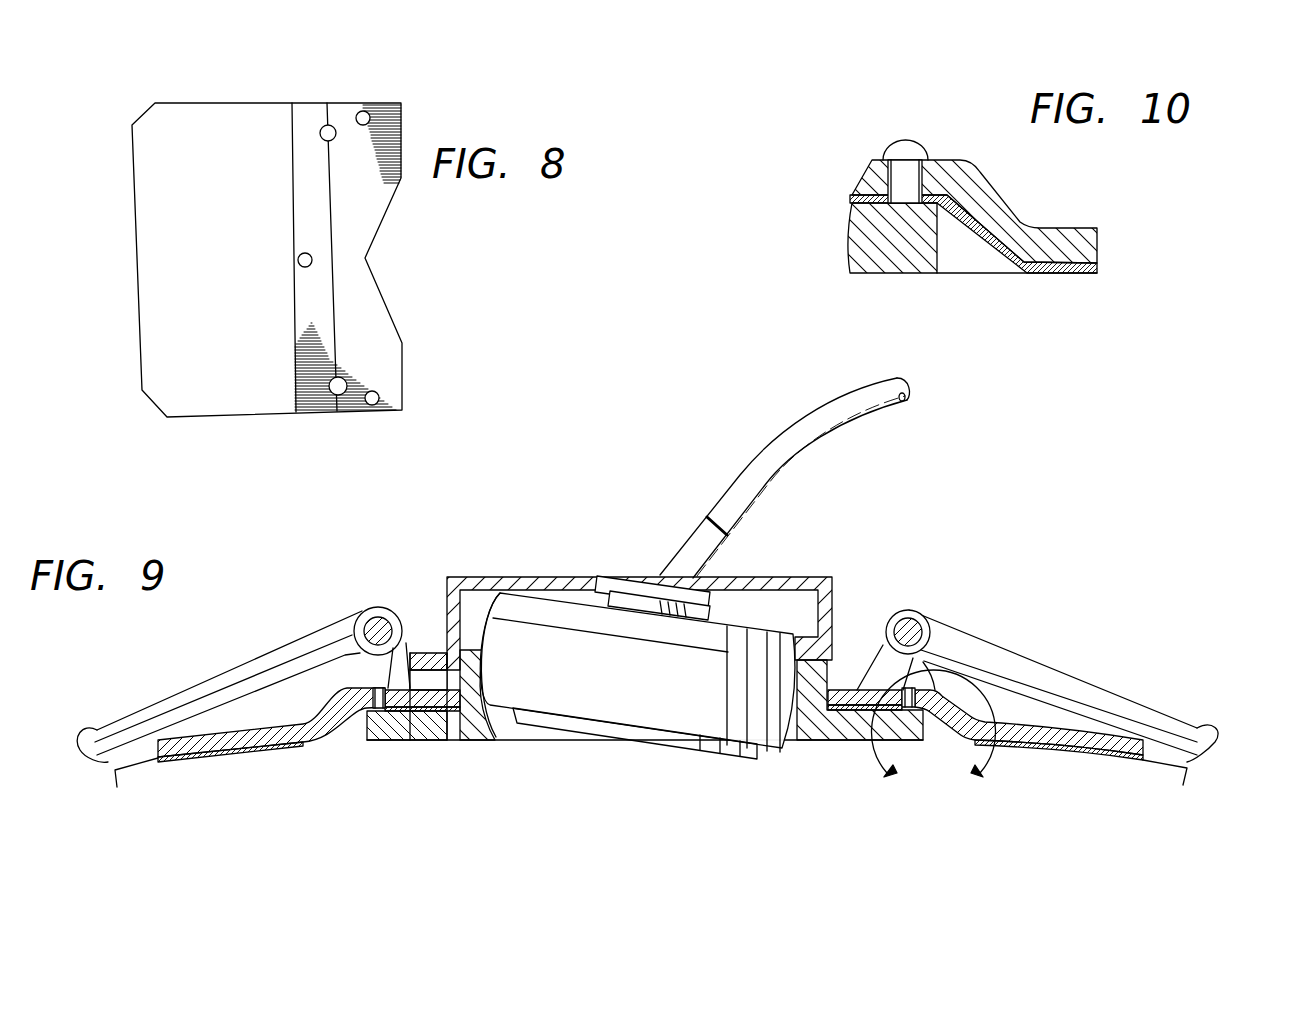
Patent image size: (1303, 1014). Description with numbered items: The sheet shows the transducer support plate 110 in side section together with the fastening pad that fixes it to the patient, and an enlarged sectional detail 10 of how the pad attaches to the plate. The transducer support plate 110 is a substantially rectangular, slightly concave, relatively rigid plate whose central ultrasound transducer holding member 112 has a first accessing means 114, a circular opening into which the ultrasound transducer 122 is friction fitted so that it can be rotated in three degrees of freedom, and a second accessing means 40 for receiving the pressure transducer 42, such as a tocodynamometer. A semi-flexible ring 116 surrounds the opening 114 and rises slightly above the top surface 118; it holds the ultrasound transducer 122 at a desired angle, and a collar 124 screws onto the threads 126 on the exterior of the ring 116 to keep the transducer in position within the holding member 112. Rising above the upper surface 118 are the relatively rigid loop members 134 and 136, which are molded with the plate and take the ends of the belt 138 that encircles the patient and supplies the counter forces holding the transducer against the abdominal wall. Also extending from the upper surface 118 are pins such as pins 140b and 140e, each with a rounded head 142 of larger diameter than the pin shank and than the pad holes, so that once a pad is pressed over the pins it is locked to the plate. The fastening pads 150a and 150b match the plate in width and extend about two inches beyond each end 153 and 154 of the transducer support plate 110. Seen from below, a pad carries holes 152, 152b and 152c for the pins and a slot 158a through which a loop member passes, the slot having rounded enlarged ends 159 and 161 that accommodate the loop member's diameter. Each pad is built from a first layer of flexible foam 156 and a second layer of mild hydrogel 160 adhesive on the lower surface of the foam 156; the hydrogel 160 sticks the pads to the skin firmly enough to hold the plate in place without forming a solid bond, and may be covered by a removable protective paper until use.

In FIG. 9, the detail view indicator 10 is at (933, 741).
In FIG. 9, the second accessing means 40 is at (432, 737).
In FIG. 9, the pressure transducer 42 is at (447, 650).
In FIG. 9, the transducer support plate 110 is at (810, 757).
In FIG. 9, the central ultrasound transducer holding member 112 is at (445, 722).
In FIG. 9, the first accessing means 114 is at (500, 735).
In FIG. 9, the ring 116 is at (810, 623).
In FIG. 9, the top surface 118 is at (398, 722).
In FIG. 9, the ultrasound transducer 122 is at (611, 684).
In FIG. 9, the collar 124 is at (508, 577).
In FIG. 9, the threads 126 is at (422, 653).
In FIG. 9, the loop member 134 is at (357, 670).
In FIG. 9, the loop member 136 is at (872, 660).
In FIG. 9, the belt 138 is at (232, 687).
In FIG. 9, the pin 140b is at (337, 690).
In FIG. 10, the pin 140e is at (890, 185).
In FIG. 9, the pin 140e is at (920, 690).
In FIG. 10, the rounded head 142 is at (905, 141).
In FIG. 8, the fastening pad 150a is at (220, 103).
In FIG. 9, the fastening pad 150a is at (195, 731).
In FIG. 10, the fastening pad 150b is at (1053, 228).
In FIG. 9, the fastening pad 150b is at (1097, 730).
In FIG. 8, the hole 152 is at (372, 405).
In FIG. 8, the hole 152b is at (312, 260).
In FIG. 8, the hole 152c is at (363, 111).
In FIG. 9, the end 153 is at (363, 741).
In FIG. 10, the end 154 is at (937, 237).
In FIG. 9, the end 154 is at (927, 745).
In FIG. 10, the foam 156 is at (1087, 250).
In FIG. 8, the slot 158a is at (337, 325).
In FIG. 8, the rounded enlarged end 159 is at (328, 125).
In FIG. 8, the hydrogel 160 is at (202, 244).
In FIG. 10, the hydrogel 160 is at (1062, 276).
In FIG. 9, the hydrogel 160 is at (228, 754).
In FIG. 8, the rounded enlarged end 161 is at (337, 395).